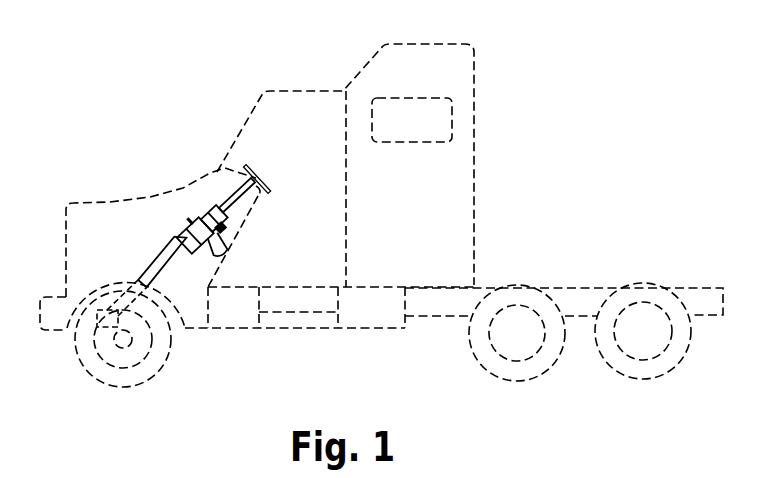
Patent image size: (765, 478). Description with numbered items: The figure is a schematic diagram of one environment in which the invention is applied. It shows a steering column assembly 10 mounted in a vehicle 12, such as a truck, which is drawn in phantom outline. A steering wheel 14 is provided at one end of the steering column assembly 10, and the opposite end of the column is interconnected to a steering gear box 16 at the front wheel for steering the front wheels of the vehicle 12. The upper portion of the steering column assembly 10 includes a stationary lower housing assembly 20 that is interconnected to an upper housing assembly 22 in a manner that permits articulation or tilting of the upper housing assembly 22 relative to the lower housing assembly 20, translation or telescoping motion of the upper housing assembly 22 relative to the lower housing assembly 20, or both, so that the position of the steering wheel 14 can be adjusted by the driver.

The steering column assembly 10 is at (240, 210).
The vehicle 12 is at (517, 158).
The steering wheel 14 is at (279, 183).
The steering gear box 16 is at (104, 305).
The lower housing assembly 20 is at (165, 241).
The upper housing assembly 22 is at (248, 210).